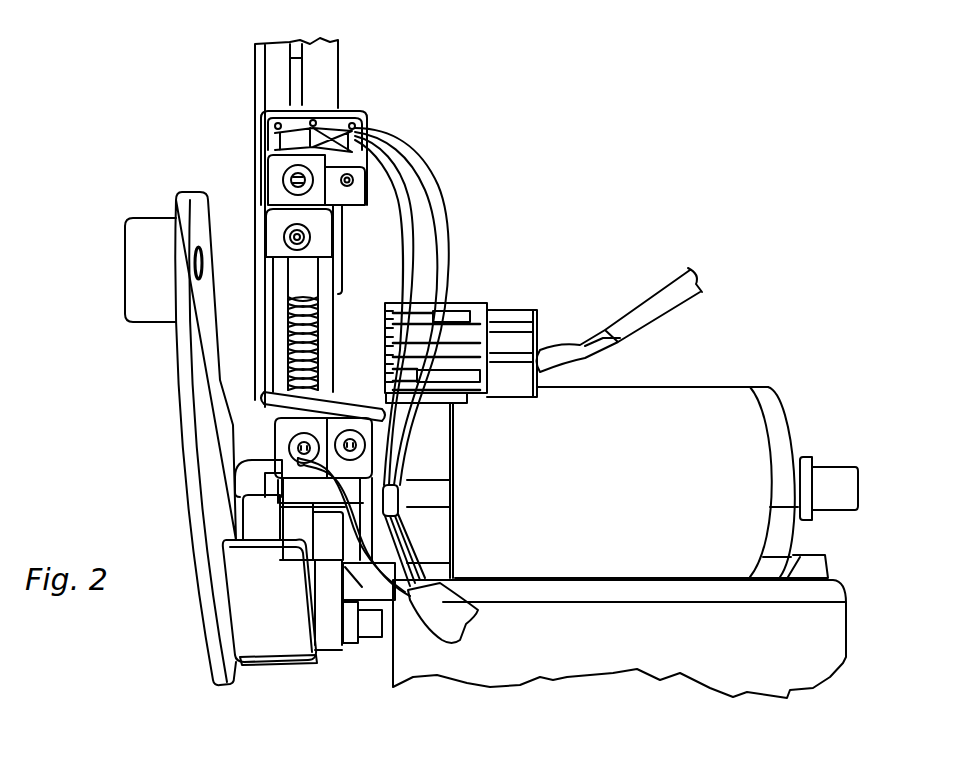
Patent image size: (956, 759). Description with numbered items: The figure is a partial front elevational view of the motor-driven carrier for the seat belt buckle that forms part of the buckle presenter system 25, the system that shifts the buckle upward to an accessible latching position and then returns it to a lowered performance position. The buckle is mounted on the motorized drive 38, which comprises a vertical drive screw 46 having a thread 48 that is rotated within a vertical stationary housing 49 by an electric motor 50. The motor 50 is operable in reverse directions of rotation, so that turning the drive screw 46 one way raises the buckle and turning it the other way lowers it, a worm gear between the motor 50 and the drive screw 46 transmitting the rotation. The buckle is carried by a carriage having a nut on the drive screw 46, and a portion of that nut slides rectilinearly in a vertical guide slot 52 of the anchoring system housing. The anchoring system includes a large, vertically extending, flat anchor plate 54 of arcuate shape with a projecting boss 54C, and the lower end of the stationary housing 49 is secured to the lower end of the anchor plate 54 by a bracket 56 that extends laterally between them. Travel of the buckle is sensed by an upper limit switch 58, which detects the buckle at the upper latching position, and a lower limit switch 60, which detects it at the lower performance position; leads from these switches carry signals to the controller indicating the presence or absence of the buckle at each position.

The buckle presenter system 25 is at (537, 110).
The motorized drive 38 is at (592, 138).
The vertical drive screw 46 is at (306, 338).
The thread 48 is at (340, 347).
The vertical stationary housing 49 is at (262, 320).
The electric motor 50 is at (663, 404).
The vertical guide slot 52 is at (282, 347).
The anchor plate 54 is at (182, 390).
The projecting boss 54C is at (147, 230).
The bracket 56 is at (268, 642).
The upper limit switch 58 is at (368, 105).
The lower limit switch 60 is at (357, 393).